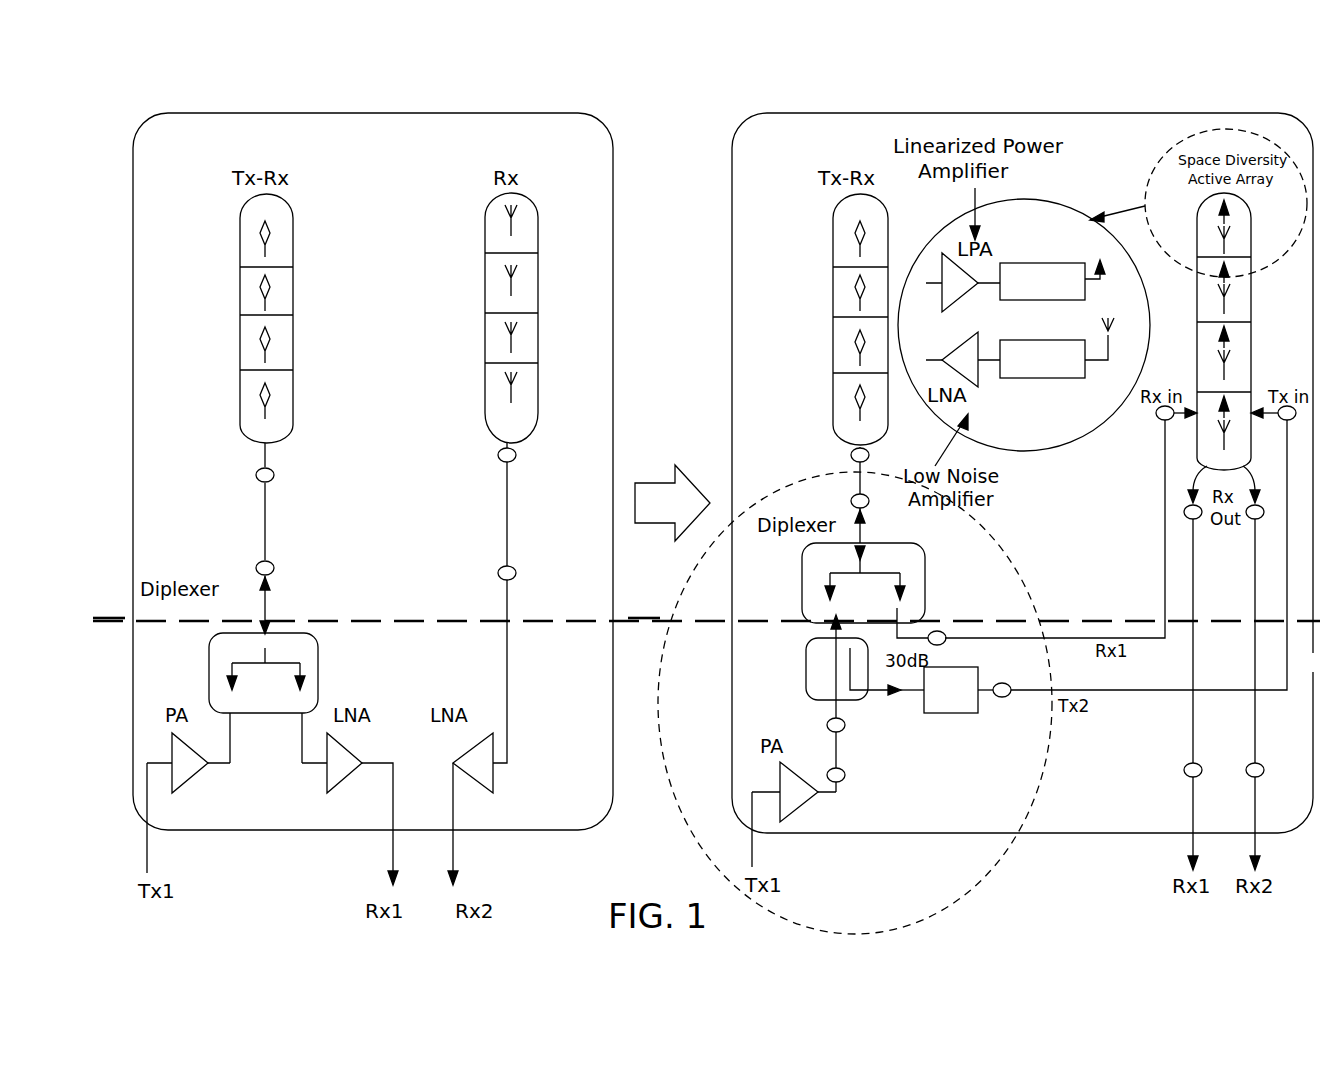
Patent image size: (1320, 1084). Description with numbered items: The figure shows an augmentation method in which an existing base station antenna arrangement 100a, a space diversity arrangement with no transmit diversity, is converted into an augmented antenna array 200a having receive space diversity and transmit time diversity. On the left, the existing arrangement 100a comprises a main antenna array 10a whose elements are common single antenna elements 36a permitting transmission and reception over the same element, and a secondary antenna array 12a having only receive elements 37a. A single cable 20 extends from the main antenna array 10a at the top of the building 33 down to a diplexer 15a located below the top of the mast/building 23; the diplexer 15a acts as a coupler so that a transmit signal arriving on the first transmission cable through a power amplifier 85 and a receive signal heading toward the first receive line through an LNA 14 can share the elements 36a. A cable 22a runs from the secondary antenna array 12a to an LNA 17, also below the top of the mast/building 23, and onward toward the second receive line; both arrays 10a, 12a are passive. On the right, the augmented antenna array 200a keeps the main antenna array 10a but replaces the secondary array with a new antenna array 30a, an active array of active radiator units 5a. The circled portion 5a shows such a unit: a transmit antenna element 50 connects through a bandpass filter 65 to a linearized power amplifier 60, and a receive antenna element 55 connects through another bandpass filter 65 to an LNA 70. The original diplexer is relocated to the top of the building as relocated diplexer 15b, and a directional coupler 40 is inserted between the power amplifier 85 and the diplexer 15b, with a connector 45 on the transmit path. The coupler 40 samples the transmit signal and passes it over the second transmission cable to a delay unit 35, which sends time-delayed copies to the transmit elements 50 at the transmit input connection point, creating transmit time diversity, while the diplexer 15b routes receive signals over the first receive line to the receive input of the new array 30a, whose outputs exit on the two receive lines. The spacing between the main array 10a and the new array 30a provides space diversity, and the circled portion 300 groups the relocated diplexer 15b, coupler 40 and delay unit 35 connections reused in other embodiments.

The existing base station antenna arrangement 100a is at (350, 113).
The main antenna array 10a is at (293, 248).
The common single antenna element 36a is at (240, 240).
The secondary antenna array 12a is at (480, 228).
The receive element 37a is at (528, 222).
The cable 20 is at (262, 512).
The cable 22a is at (498, 498).
The top of building 33 is at (112, 613).
The below the top of the mast/building 23 is at (96, 640).
The diplexer 15a is at (318, 640).
The low noise amplifier 14 is at (325, 762).
The LNA 17 is at (505, 778).
The power amplifier 85 is at (190, 778).
The augmented antenna array 200a is at (843, 113).
The active radiator unit 5a is at (1050, 207).
The amplifier 60 is at (938, 277).
The bandpass filter 65 is at (1052, 262).
The transmit antenna element 50 is at (1108, 262).
The receive antenna element 55 is at (1120, 328).
The LNA 70 is at (920, 362).
The new antenna array 30a is at (1258, 336).
The relocated diplexer 15b is at (802, 565).
The directional coupler 40 is at (882, 662).
The connector 45 is at (825, 722).
The delay unit 35 is at (957, 718).
The circled portion 300 is at (1020, 858).